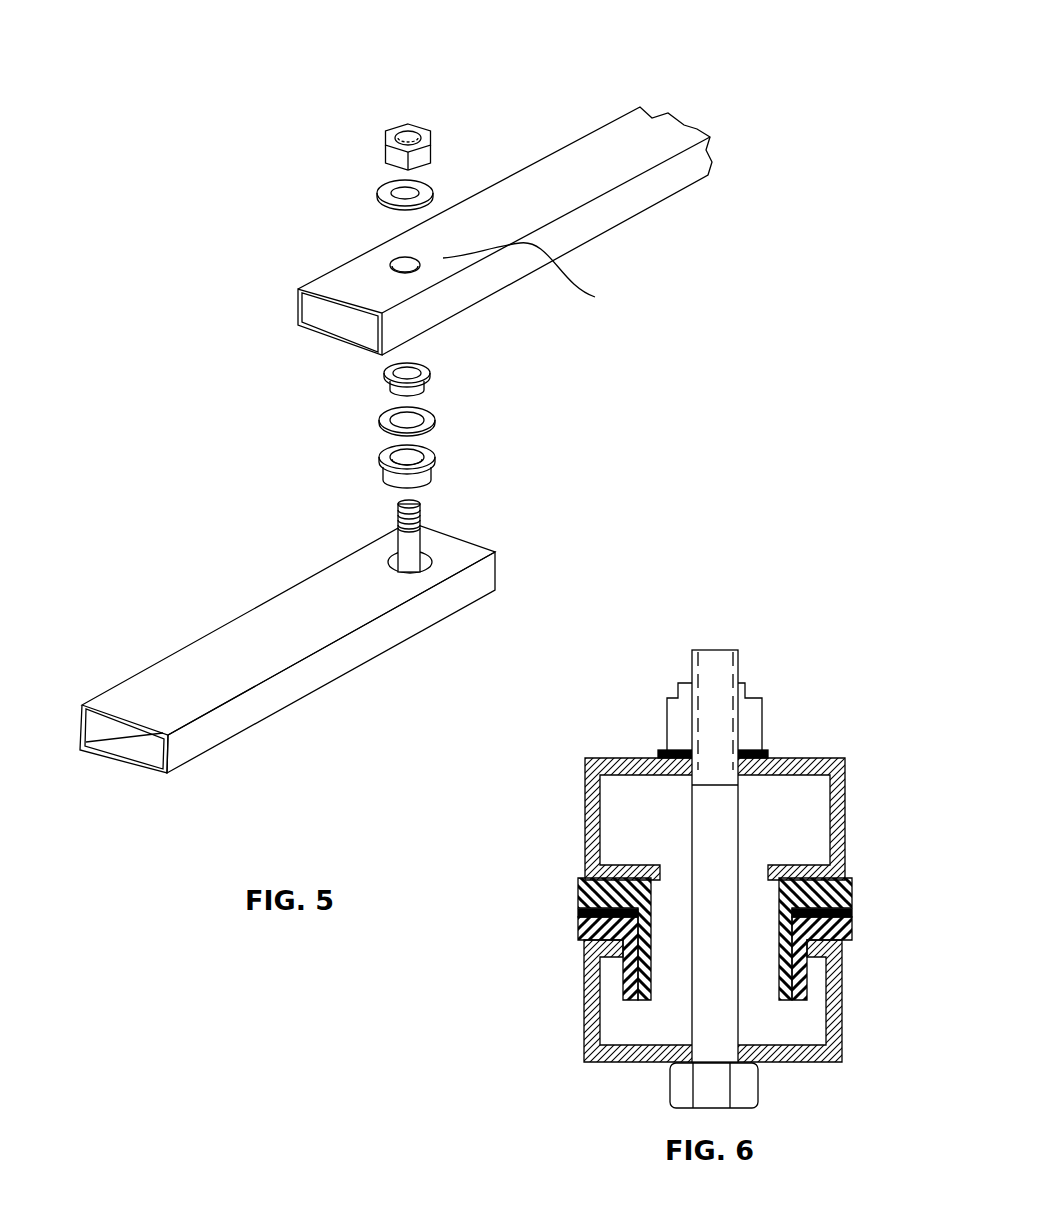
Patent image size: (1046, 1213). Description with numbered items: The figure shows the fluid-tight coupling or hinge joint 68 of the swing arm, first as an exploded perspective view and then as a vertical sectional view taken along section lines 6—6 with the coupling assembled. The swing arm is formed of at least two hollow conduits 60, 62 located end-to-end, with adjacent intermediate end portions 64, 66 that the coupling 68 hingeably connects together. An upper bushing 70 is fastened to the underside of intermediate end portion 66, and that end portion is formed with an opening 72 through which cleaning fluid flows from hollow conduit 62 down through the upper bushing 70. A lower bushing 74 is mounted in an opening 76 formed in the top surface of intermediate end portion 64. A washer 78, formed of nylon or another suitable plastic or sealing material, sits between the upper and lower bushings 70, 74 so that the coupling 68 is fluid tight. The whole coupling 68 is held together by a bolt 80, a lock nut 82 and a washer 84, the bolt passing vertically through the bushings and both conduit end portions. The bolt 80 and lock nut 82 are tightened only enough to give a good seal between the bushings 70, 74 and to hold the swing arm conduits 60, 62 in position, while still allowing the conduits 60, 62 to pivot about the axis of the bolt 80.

In FIG. 5, the section lines 6— 6 is at (412, 107).
In FIG. 5, the hollow conduit 60 is at (95, 753).
In FIG. 5, the hollow conduit 62 is at (617, 200).
In FIG. 5, the intermediate end portion 64 is at (295, 607).
In FIG. 6, the intermediate end portion 64 is at (840, 1003).
In FIG. 5, the intermediate end portion 66 is at (541, 276).
In FIG. 6, the intermediate end portion 66 is at (838, 817).
In FIG. 5, the fluid-tight coupling 68 is at (278, 427).
In FIG. 6, the fluid-tight coupling 68 is at (868, 725).
In FIG. 5, the upper bushing 70 is at (430, 368).
In FIG. 6, the upper bushing 70 is at (848, 892).
In FIG. 6, the opening 72 is at (745, 868).
In FIG. 5, the lower bushing 74 is at (437, 453).
In FIG. 6, the lower bushing 74 is at (850, 924).
In FIG. 5, the opening 76 is at (437, 547).
In FIG. 5, the washer 78 is at (437, 412).
In FIG. 6, the washer 78 is at (578, 913).
In FIG. 5, the bolt 80 is at (423, 503).
In FIG. 6, the bolt 80 is at (678, 1097).
In FIG. 5, the lock nut 82 is at (385, 140).
In FIG. 6, the lock nut 82 is at (748, 688).
In FIG. 5, the washer 84 is at (377, 193).
In FIG. 6, the washer 84 is at (768, 753).